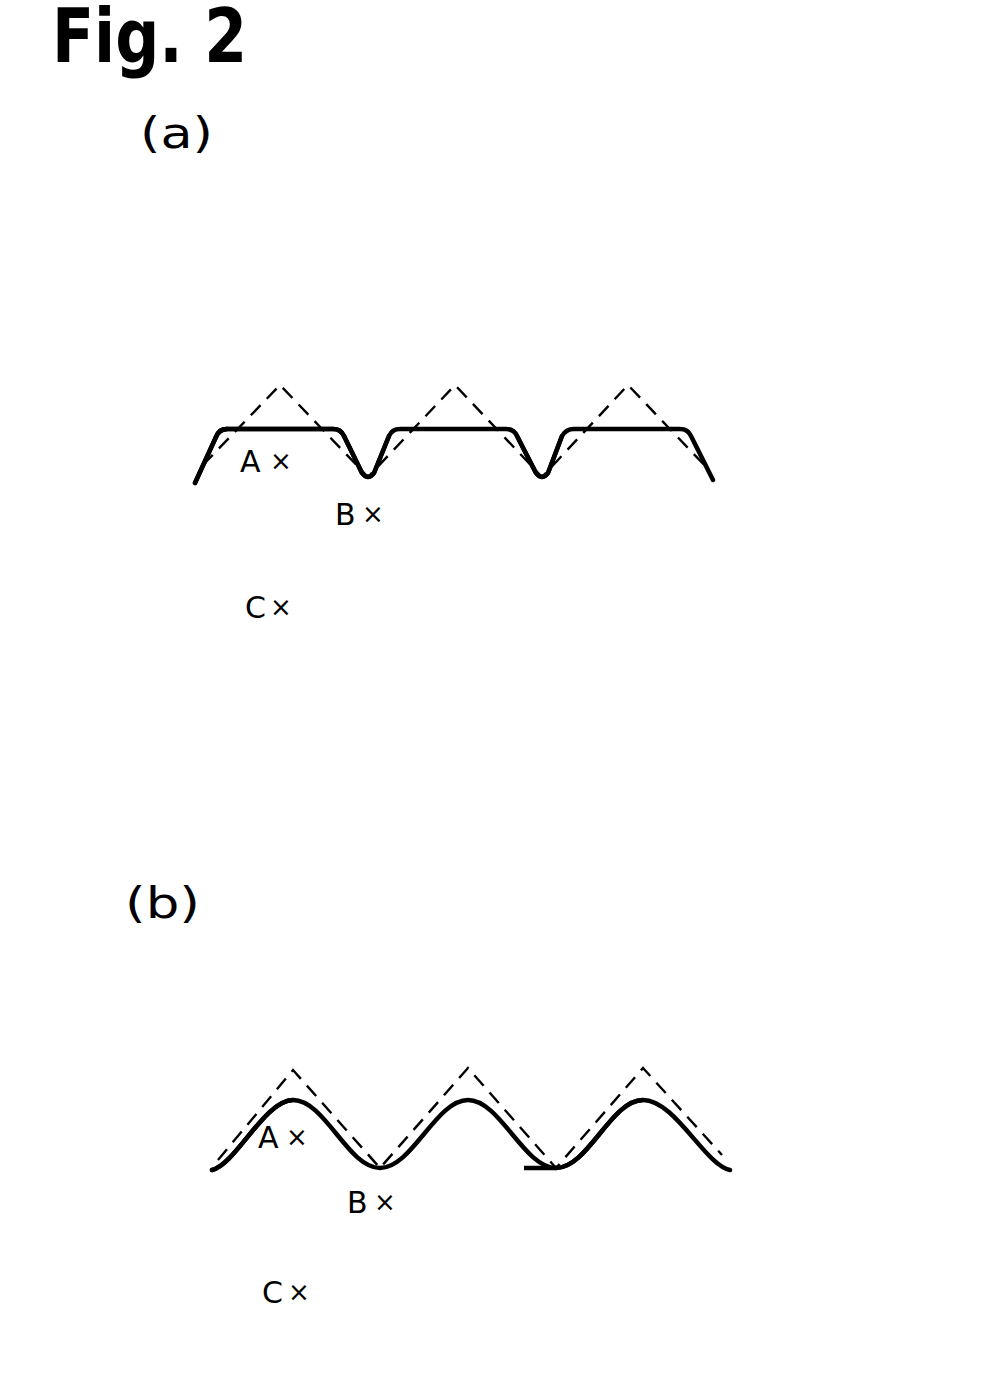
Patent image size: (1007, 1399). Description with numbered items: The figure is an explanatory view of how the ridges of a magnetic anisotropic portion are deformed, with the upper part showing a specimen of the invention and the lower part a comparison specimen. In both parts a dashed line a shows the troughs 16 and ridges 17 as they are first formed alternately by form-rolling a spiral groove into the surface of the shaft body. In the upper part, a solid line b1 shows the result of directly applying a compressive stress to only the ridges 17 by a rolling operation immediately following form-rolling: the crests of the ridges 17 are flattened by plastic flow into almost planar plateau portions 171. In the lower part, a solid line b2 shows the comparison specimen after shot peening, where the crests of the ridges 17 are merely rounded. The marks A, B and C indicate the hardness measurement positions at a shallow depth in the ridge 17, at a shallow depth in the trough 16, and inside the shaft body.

The planar plateau portion 171 is at (270, 429).
The trough 16 is at (557, 1165).
The ridge 17 is at (700, 445).
The dashed line a is at (297, 395).
The solid line b1 is at (208, 455).
The solid line b2 is at (260, 1125).